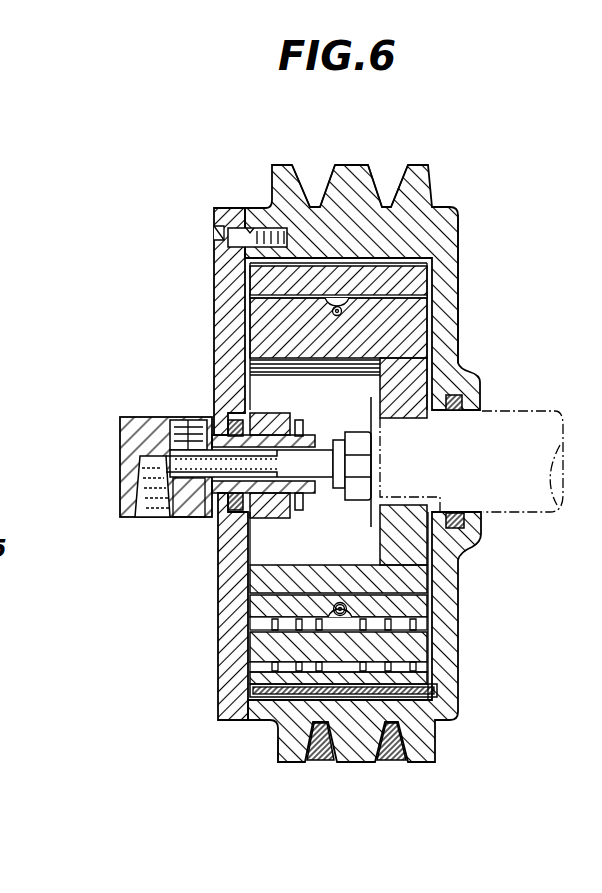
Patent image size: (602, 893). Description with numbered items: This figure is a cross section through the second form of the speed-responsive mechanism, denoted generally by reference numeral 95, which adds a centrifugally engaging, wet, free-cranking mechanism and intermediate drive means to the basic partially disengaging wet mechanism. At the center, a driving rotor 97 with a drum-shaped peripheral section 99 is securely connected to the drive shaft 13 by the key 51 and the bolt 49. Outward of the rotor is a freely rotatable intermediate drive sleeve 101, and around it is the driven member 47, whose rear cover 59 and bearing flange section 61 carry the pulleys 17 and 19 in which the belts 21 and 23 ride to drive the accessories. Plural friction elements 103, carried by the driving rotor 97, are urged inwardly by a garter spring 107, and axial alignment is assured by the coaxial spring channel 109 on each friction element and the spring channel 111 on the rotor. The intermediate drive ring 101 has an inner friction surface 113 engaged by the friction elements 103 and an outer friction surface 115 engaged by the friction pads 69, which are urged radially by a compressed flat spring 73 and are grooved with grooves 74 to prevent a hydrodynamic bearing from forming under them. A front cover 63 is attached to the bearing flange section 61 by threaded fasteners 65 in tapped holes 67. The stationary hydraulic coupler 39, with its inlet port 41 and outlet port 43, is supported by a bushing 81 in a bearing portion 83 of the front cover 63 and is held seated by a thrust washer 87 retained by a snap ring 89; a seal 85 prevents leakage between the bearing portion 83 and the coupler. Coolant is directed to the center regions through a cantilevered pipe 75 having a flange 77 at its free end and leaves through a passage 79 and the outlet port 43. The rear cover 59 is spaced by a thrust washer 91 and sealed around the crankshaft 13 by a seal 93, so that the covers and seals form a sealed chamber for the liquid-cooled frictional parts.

The crankshaft 13 is at (517, 506).
The pulley 17 is at (313, 200).
The pulley 19 is at (388, 200).
The belt 21 is at (319, 764).
The belt 23 is at (394, 764).
The hydraulic coupler 39 is at (117, 430).
The inlet port 41 is at (138, 459).
The outlet port 43 is at (181, 424).
The driven member 47 is at (280, 764).
The bolt 49 is at (355, 490).
The key 51 is at (414, 490).
The rear cover 59 is at (449, 268).
The bearing flange section 61 is at (410, 227).
The front cover 63 is at (228, 311).
The threaded fasteners 65 is at (214, 230).
The tapped holes 67 is at (247, 224).
The friction pads 69 is at (255, 685).
The flat spring 73 is at (272, 696).
The grooves 74 is at (433, 683).
The cantilevered pipe 75 is at (173, 466).
The flange 77 is at (330, 448).
The passage 79 is at (202, 482).
The bushing 81 is at (288, 509).
The bearing portion 83 is at (248, 537).
The seal 85 is at (233, 421).
The thrust washer 87 is at (302, 424).
The snap ring 89 is at (306, 425).
The thrust washer 91 is at (468, 366).
The seal 93 is at (463, 548).
The second form of the preferred embodiment 95 is at (214, 170).
The driving rotor 97 is at (413, 343).
The drum-shaped peripheral section 99 is at (262, 582).
The intermediate drive sleeve 101 is at (413, 648).
The friction elements 103 is at (420, 618).
The garter spring 107 is at (352, 313).
The spring channel 109 is at (352, 603).
The spring channel 111 is at (440, 298).
The inner friction surface 113 is at (272, 624).
The outer friction surface 115 is at (275, 665).